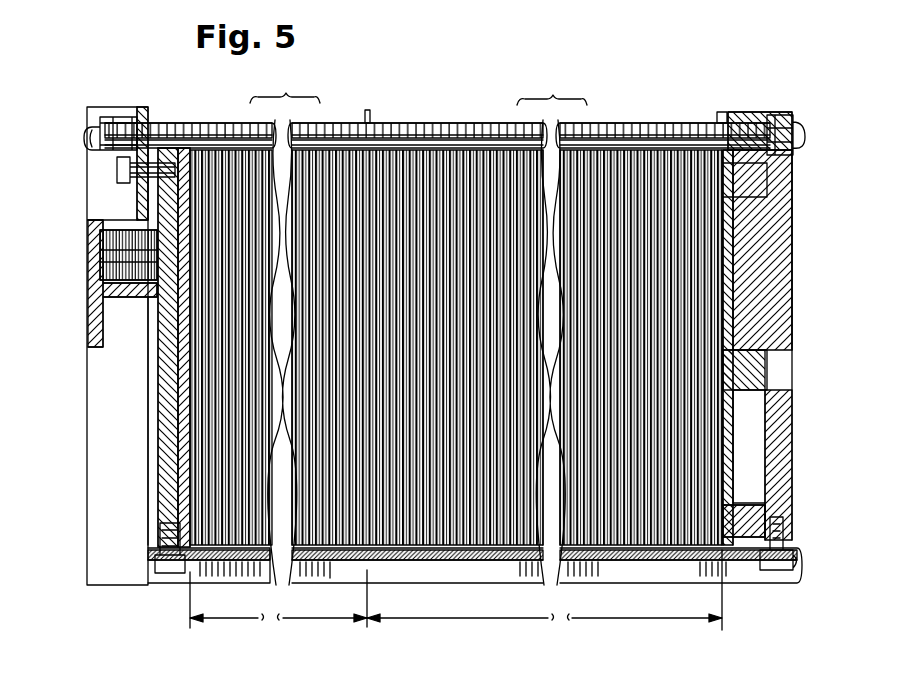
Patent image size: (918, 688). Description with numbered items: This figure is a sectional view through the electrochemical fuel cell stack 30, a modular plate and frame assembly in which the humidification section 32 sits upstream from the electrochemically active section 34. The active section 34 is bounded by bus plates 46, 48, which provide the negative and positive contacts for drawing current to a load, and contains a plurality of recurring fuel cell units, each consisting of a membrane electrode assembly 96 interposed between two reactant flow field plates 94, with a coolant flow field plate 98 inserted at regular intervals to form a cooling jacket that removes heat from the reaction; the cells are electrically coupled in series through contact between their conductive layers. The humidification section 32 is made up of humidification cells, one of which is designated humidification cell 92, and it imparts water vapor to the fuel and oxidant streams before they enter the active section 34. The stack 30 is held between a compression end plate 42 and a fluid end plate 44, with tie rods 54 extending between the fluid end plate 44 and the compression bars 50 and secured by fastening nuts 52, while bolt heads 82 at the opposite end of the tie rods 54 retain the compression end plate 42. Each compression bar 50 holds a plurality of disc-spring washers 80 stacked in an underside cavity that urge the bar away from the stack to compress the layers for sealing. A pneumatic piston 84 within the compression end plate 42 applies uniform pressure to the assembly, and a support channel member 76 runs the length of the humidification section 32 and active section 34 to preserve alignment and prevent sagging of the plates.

The electrochemical fuel cell stack 30 is at (170, 592).
The humidification section 32 is at (293, 622).
The electrochemically active section 34 is at (572, 622).
The compression end plate 42 is at (750, 112).
The fluid end plate 44 is at (170, 128).
The bus plate 46 is at (368, 122).
The bus plate 48 is at (720, 112).
The compression bar 50 is at (97, 185).
The fastening nut 52 is at (86, 130).
The tie rod 54 is at (165, 127).
The support channel member 76 is at (725, 575).
The disc-spring washer 80 is at (90, 283).
The bolt head 82 is at (793, 142).
The pneumatic piston 84 is at (790, 183).
The humidification cell 92 is at (330, 157).
The reactant flow field plate 94 is at (410, 157).
The membrane electrode assembly 96 is at (427, 157).
The coolant flow field plate 98 is at (440, 157).